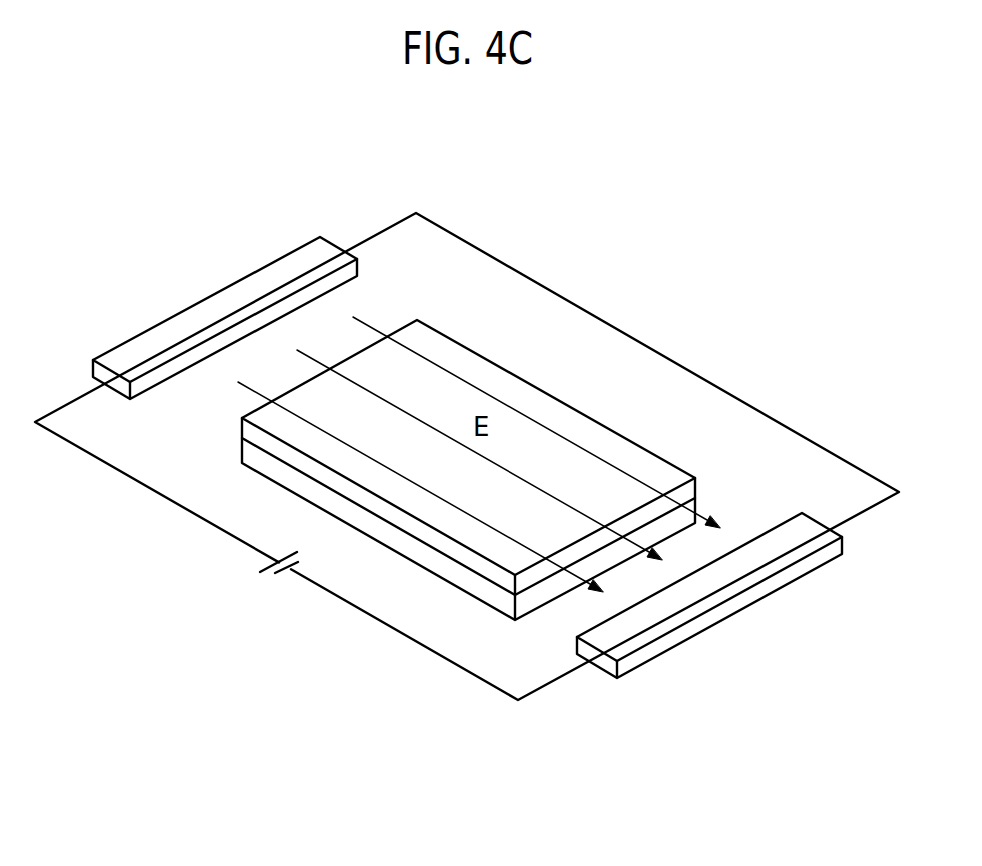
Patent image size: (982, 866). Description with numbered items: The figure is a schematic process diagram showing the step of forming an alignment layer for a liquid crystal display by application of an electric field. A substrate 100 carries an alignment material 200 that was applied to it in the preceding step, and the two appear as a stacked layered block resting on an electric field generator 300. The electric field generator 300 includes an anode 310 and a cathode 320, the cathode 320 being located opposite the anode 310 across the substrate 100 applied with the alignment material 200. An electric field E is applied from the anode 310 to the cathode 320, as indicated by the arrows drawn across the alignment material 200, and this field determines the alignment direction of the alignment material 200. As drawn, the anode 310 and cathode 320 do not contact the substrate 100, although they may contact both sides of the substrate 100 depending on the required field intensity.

The substrate 100 is at (245, 455).
The alignment material 200 is at (245, 425).
The electric field generator 300 is at (269, 588).
The anode 310 is at (190, 315).
The cathode 320 is at (758, 595).